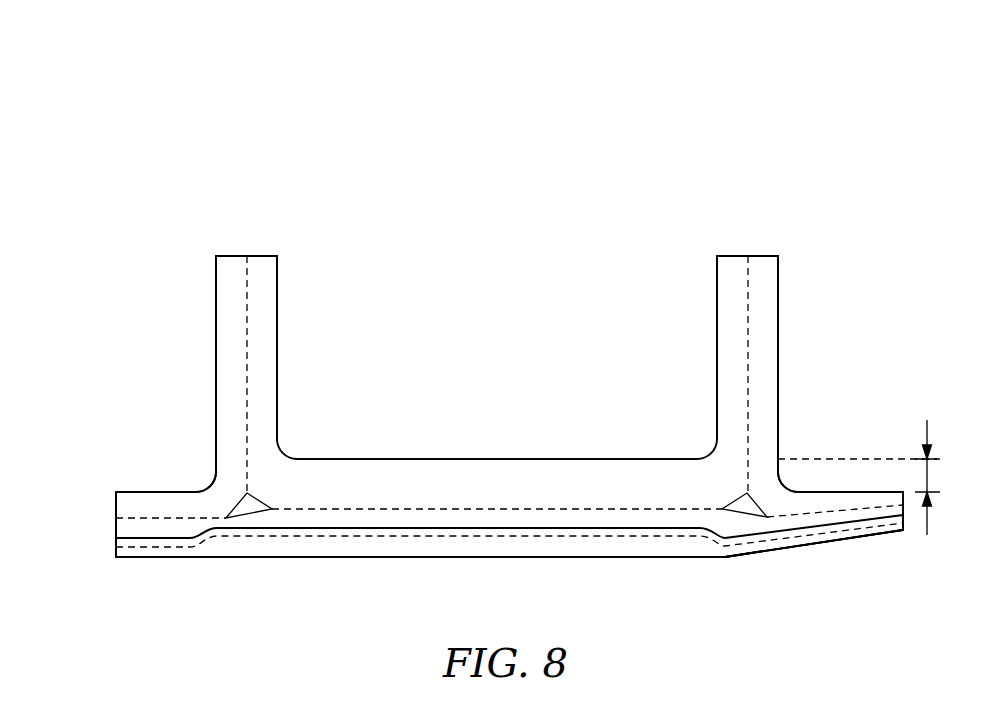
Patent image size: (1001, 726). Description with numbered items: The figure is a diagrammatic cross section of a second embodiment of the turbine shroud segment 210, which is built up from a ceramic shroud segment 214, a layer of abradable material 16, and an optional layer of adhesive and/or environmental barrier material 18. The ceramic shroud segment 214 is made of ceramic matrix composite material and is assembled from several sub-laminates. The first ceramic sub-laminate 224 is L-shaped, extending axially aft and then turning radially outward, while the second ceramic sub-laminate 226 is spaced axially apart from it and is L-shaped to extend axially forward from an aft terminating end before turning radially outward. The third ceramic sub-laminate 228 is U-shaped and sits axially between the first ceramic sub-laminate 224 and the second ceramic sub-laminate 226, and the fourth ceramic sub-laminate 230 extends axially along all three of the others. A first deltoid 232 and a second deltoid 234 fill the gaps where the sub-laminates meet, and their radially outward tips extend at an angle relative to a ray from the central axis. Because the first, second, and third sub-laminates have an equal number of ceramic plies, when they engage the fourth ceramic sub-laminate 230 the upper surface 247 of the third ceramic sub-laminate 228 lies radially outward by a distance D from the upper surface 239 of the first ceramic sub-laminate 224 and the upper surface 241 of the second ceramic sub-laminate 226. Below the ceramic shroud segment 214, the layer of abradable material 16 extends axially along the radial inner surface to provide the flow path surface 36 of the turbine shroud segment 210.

The turbine shroud segment 210 is at (185, 137).
The ceramic shroud segment 214 is at (561, 415).
The first ceramic sub-laminate 224 is at (222, 310).
The second ceramic sub-laminate 226 is at (768, 360).
The third ceramic sub-laminate 228 is at (388, 458).
The upper surface 247 is at (463, 458).
The upper surface 239 is at (150, 492).
The upper surface 241 is at (828, 492).
The fourth ceramic sub-laminate 230 is at (122, 526).
The first deltoid 232 is at (268, 491).
The second deltoid 234 is at (722, 492).
The layer of abradable material 16 is at (242, 555).
The layer of adhesive and/or environmental barrier material 18 is at (104, 551).
The flow path surface 36 is at (607, 557).
The distance D is at (868, 477).